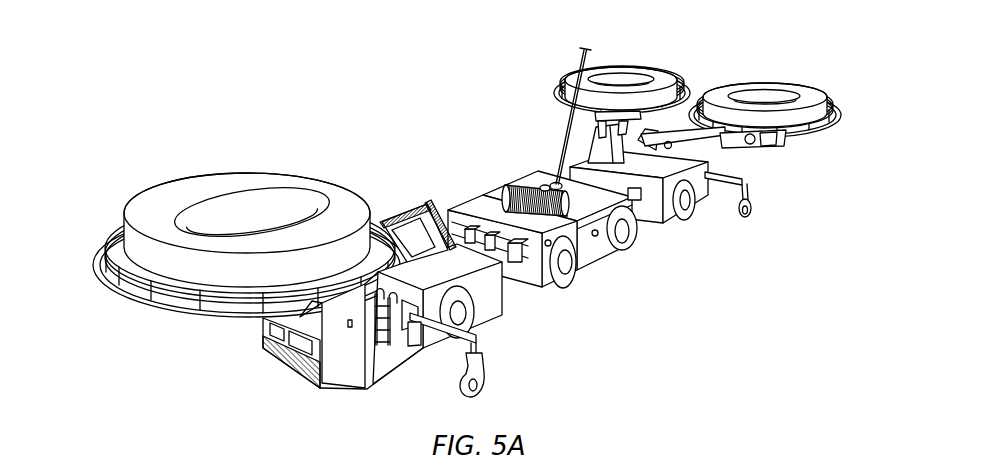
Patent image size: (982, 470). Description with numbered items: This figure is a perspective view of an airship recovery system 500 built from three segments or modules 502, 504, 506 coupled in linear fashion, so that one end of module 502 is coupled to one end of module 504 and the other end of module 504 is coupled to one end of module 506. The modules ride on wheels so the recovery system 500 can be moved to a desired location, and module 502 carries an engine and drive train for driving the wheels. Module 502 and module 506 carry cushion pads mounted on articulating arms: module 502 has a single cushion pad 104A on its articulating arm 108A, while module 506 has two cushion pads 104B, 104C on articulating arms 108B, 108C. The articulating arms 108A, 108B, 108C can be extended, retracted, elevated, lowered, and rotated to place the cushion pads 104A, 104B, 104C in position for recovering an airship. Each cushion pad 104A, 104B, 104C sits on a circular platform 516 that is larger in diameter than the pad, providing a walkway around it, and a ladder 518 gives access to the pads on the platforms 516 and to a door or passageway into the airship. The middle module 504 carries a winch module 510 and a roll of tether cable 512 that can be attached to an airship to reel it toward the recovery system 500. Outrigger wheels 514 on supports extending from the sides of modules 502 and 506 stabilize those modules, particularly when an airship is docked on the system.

The recovery system 500 is at (316, 95).
The module 502 is at (270, 369).
The module 504 is at (609, 265).
The module 506 is at (688, 230).
The cushion pad 104A is at (209, 185).
The cushion pad 104B is at (613, 63).
The cushion pad 104C is at (764, 82).
The articulating arm 108A is at (397, 210).
The articulating arm 108B is at (598, 115).
The articulating arm 108C is at (773, 143).
The winch module 510 is at (555, 181).
The tether cable 512 is at (519, 187).
The outrigger wheels 514 is at (480, 356).
The circular platforms 516 is at (126, 294).
The ladders 518 is at (425, 203).